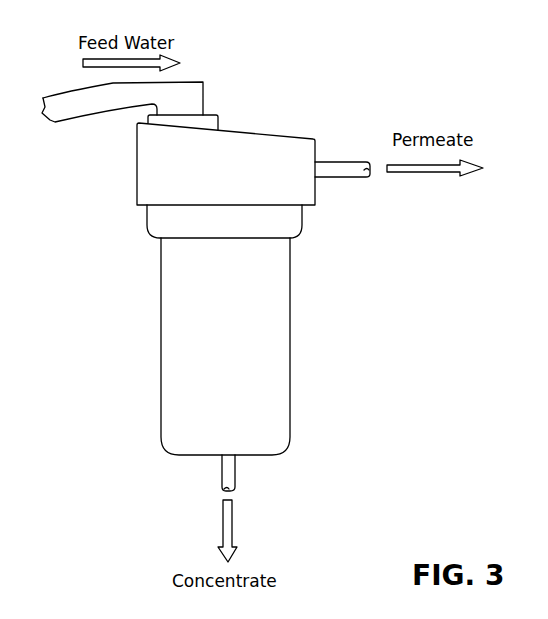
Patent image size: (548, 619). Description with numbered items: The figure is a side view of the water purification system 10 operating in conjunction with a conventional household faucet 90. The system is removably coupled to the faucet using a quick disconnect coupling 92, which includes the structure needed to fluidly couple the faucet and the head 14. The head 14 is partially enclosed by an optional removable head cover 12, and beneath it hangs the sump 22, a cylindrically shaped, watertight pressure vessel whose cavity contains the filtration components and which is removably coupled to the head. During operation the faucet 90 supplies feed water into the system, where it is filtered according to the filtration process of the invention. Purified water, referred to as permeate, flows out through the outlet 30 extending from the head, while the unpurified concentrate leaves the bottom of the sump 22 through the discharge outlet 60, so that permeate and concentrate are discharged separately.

The water purification system 10 is at (341, 113).
The removable head cover 12 is at (140, 163).
The head 14 is at (155, 217).
The sump 22 is at (170, 352).
The outlet 30 is at (317, 173).
The discharge outlet 60 is at (232, 470).
The conventional household faucet 90 is at (83, 103).
The quick disconnect coupling 92 is at (212, 120).